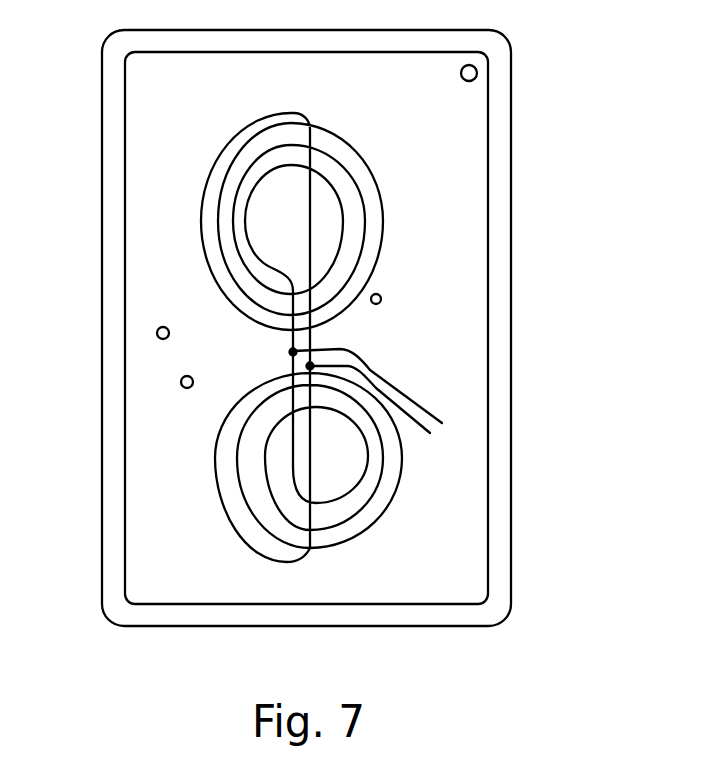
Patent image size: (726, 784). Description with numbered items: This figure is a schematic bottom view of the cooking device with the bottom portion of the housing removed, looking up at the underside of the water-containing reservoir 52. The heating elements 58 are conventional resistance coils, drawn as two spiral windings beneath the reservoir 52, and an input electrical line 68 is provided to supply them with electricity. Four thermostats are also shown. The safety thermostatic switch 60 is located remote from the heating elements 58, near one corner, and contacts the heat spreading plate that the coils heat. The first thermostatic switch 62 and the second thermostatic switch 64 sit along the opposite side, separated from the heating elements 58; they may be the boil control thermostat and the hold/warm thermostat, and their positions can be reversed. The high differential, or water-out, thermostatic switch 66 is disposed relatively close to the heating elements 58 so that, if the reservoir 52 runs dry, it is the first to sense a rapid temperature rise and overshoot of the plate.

The water-containing reservoir 52 is at (499, 589).
The heating elements 58 is at (383, 218).
The safety thermostatic switch 60 is at (475, 68).
The first thermostatic switch 62 is at (157, 336).
The second thermostatic switch 64 is at (181, 385).
The high differential (water-out) thermostatic switch 66 is at (381, 297).
The input electrical line 68 is at (408, 417).